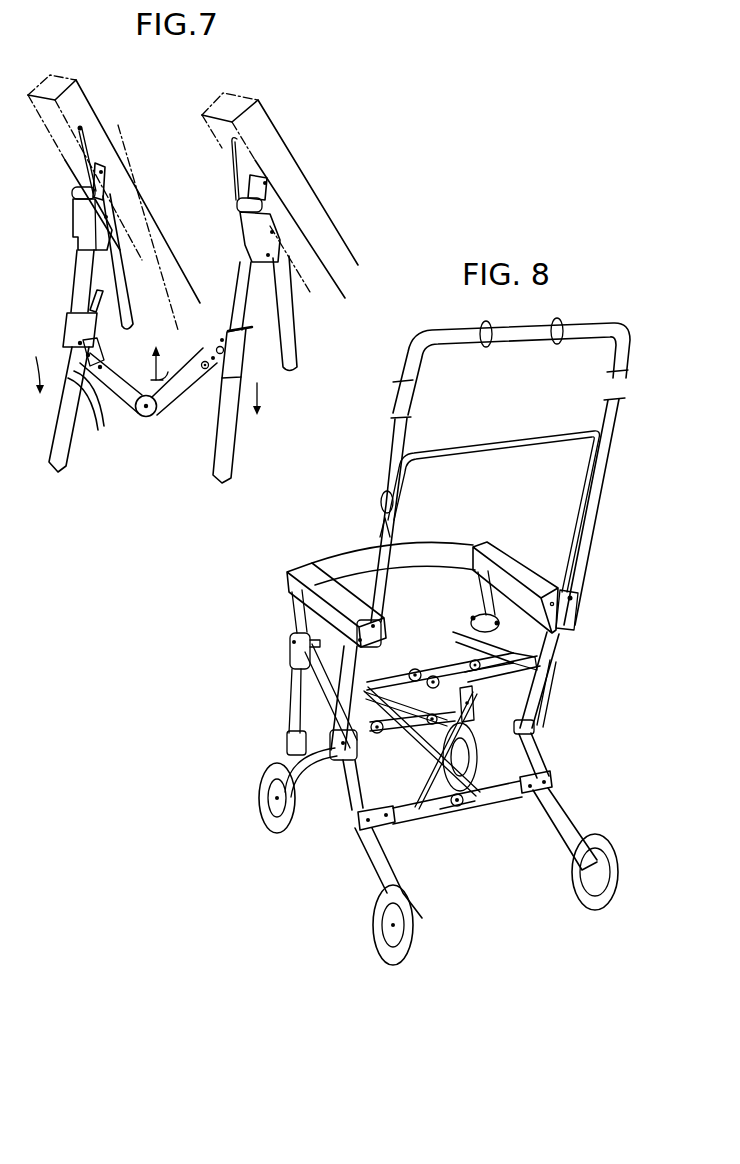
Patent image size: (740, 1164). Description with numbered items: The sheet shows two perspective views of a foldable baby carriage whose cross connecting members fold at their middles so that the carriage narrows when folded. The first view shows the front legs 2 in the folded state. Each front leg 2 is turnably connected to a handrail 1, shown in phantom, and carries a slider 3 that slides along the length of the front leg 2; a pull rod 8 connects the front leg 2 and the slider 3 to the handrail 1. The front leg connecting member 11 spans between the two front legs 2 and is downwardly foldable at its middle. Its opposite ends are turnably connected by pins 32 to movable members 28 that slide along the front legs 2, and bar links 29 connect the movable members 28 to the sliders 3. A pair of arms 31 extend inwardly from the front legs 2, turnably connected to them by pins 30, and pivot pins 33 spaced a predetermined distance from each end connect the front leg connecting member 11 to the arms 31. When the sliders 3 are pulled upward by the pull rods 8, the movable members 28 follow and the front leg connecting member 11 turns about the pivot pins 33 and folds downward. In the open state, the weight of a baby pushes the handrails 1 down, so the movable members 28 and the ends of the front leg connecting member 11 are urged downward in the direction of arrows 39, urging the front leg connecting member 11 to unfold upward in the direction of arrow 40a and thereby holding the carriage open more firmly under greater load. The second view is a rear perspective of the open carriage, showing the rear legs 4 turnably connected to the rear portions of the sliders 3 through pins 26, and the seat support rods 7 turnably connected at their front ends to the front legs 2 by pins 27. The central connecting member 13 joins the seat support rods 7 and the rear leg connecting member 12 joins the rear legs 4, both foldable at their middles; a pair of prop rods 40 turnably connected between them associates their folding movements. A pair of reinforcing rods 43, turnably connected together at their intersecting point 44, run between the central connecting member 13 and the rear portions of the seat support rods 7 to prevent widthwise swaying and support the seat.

In FIG. 7, the handrail 1 is at (78, 102).
In FIG. 8, the handrail 1 is at (302, 570).
In FIG. 7, the front leg 2 is at (78, 262).
In FIG. 7, the slider 3 is at (78, 213).
In FIG. 7, the rear leg 4 is at (134, 318).
In FIG. 8, the rear leg 4 is at (357, 784).
In FIG. 8, the seat support rod 7 is at (465, 636).
In FIG. 7, the pull rod 8 is at (90, 147).
In FIG. 7, the front leg connecting member 11 is at (157, 420).
In FIG. 8, the rear leg connecting member 12 is at (455, 808).
In FIG. 8, the central connecting member 13 is at (428, 665).
In FIG. 8, the pin 26 is at (302, 654).
In FIG. 8, the pin 27 is at (470, 648).
In FIG. 7, the movable member 28 is at (70, 325).
In FIG. 7, the bar link 29 is at (97, 292).
In FIG. 7, the pin 30 is at (64, 406).
In FIG. 7, the arm 31 is at (83, 383).
In FIG. 7, the pin 32 is at (98, 343).
In FIG. 7, the pivot pin 33 is at (100, 383).
In FIG. 7, the arrow 39 is at (282, 407).
In FIG. 8, the prop rod 40 is at (432, 773).
In FIG. 7, the arrow 40a is at (168, 363).
In FIG. 8, the reinforcing rod 43 is at (391, 690).
In FIG. 8, the intersecting point 44 is at (435, 688).